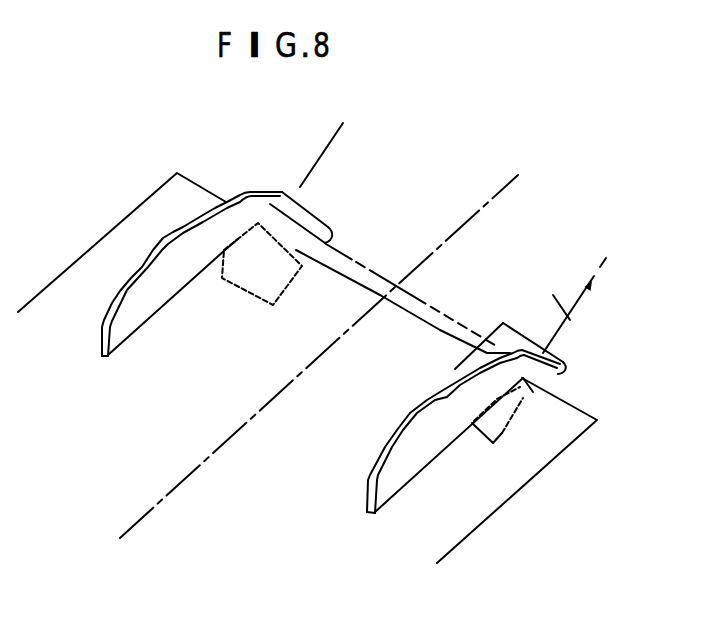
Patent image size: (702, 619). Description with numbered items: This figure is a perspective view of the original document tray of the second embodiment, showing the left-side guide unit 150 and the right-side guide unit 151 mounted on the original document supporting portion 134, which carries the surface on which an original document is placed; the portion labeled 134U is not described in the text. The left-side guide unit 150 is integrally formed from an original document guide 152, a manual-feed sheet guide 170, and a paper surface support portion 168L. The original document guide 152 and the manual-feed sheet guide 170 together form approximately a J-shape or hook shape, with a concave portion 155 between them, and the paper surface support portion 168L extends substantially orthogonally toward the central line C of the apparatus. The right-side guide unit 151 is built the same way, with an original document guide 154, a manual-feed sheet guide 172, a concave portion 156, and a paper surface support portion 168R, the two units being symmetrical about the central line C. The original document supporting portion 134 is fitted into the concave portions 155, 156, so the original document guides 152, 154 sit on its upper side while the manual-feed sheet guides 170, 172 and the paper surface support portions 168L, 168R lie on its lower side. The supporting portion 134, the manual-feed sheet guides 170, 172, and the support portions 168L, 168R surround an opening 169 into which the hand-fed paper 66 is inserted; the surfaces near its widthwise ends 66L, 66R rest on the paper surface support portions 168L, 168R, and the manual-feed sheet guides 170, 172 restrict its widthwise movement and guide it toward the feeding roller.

The left-side guide unit 150 is at (217, 254).
The right-side guide unit 151 is at (482, 423).
The original document guide 152 is at (162, 287).
The original document guide 154 is at (423, 441).
The concave portion 155 is at (238, 229).
The concave portion 156 is at (525, 385).
The paper surface support portion 168L is at (277, 302).
The paper surface support portion 168R is at (507, 308).
The opening 169 is at (337, 300).
The manual-feed sheet guide 170 is at (264, 215).
The manual-feed sheet guide 172 is at (521, 392).
The upper support bar 134U is at (370, 284).
The original document supporting portion 134 is at (473, 463).
The widthwise end of the hand-fed paper 66L is at (325, 147).
The widthwise end of the hand-fed paper 66R is at (592, 286).
The hand-fed paper 66 is at (543, 281).
The central line C is at (188, 478).